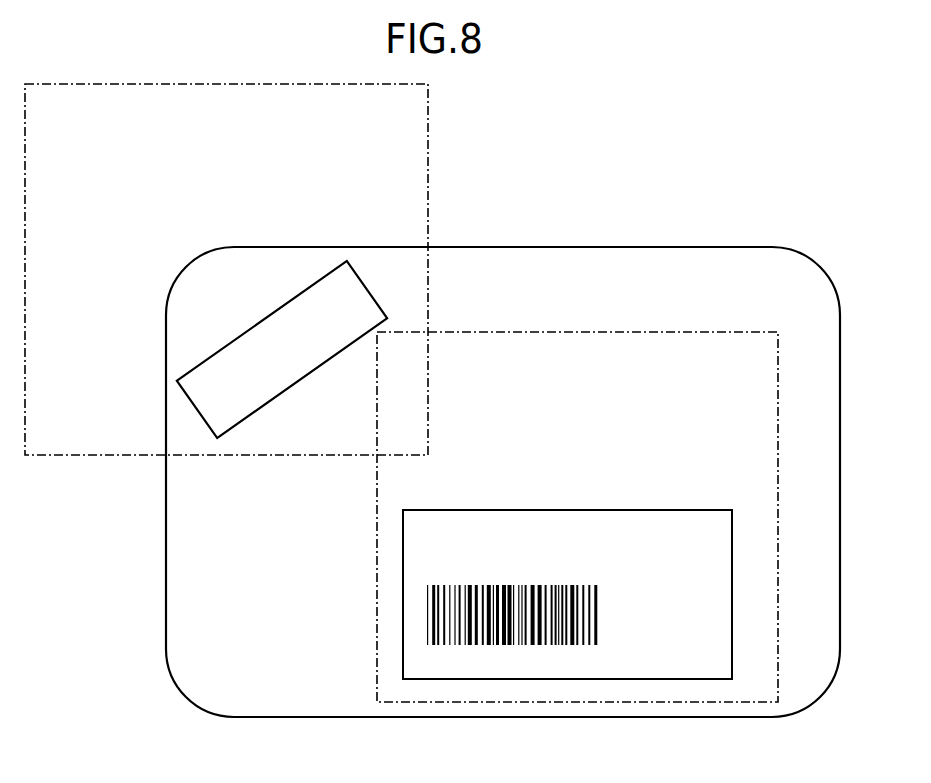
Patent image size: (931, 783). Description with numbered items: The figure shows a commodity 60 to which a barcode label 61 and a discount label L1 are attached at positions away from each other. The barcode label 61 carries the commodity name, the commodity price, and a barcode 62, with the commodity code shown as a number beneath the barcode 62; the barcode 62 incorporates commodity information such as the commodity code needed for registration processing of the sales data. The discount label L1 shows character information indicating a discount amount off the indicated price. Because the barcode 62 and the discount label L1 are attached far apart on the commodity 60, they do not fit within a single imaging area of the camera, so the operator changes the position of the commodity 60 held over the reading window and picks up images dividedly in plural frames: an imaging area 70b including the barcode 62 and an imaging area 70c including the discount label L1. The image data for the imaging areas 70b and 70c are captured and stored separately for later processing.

The commodity 60 is at (758, 247).
The barcode label 61 is at (655, 510).
The barcode 62 is at (427, 610).
The imaging area 70b is at (377, 665).
The imaging area 70c is at (108, 455).
The discount label L1 is at (303, 381).